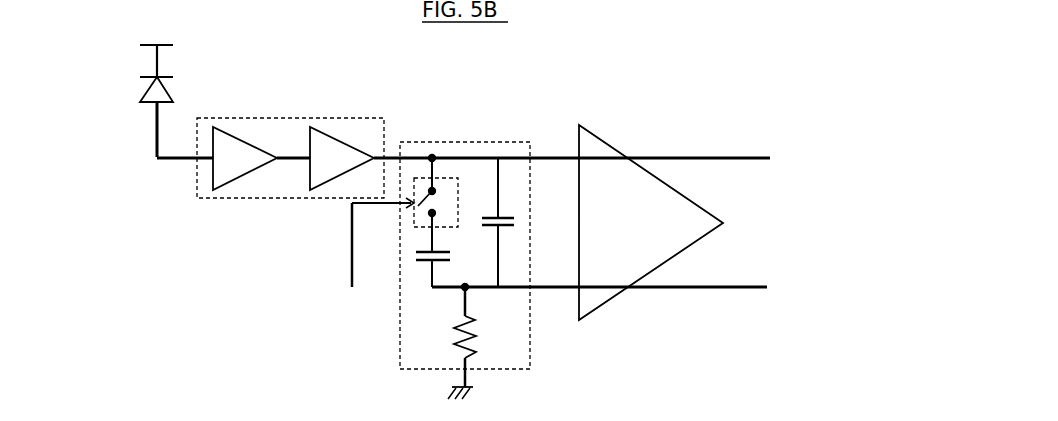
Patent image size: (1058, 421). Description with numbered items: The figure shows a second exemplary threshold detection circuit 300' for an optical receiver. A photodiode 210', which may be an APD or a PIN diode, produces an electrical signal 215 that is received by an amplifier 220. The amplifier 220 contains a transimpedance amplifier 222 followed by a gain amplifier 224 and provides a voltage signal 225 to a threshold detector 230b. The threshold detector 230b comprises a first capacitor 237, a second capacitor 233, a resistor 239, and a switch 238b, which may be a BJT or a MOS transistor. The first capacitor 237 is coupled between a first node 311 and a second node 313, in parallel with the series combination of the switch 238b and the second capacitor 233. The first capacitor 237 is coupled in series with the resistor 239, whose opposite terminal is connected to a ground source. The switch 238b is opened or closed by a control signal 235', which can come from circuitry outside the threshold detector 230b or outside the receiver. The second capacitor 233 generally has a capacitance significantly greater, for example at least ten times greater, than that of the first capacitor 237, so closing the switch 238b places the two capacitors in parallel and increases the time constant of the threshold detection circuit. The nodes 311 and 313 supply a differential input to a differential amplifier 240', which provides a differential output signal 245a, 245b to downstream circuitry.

The threshold detection circuit 300' is at (792, 29).
The photodiode 210' is at (117, 101).
The electrical signal 215 is at (155, 141).
The amplifier 220 is at (252, 118).
The transimpedance amplifier 222 is at (228, 198).
The gain amplifier 224 is at (332, 127).
The voltage signal 225 is at (390, 152).
The threshold detector 230b is at (400, 352).
The node 311 is at (515, 156).
The switch 238b is at (455, 178).
The control signal 235' is at (344, 257).
The second capacitor 233 is at (415, 256).
The first capacitor 237 is at (513, 222).
The node 313 is at (507, 291).
The resistor 239 is at (478, 347).
The differential amplifier 240' is at (687, 222).
The differential output signal 245a is at (735, 157).
The differential output signal 245b is at (733, 290).